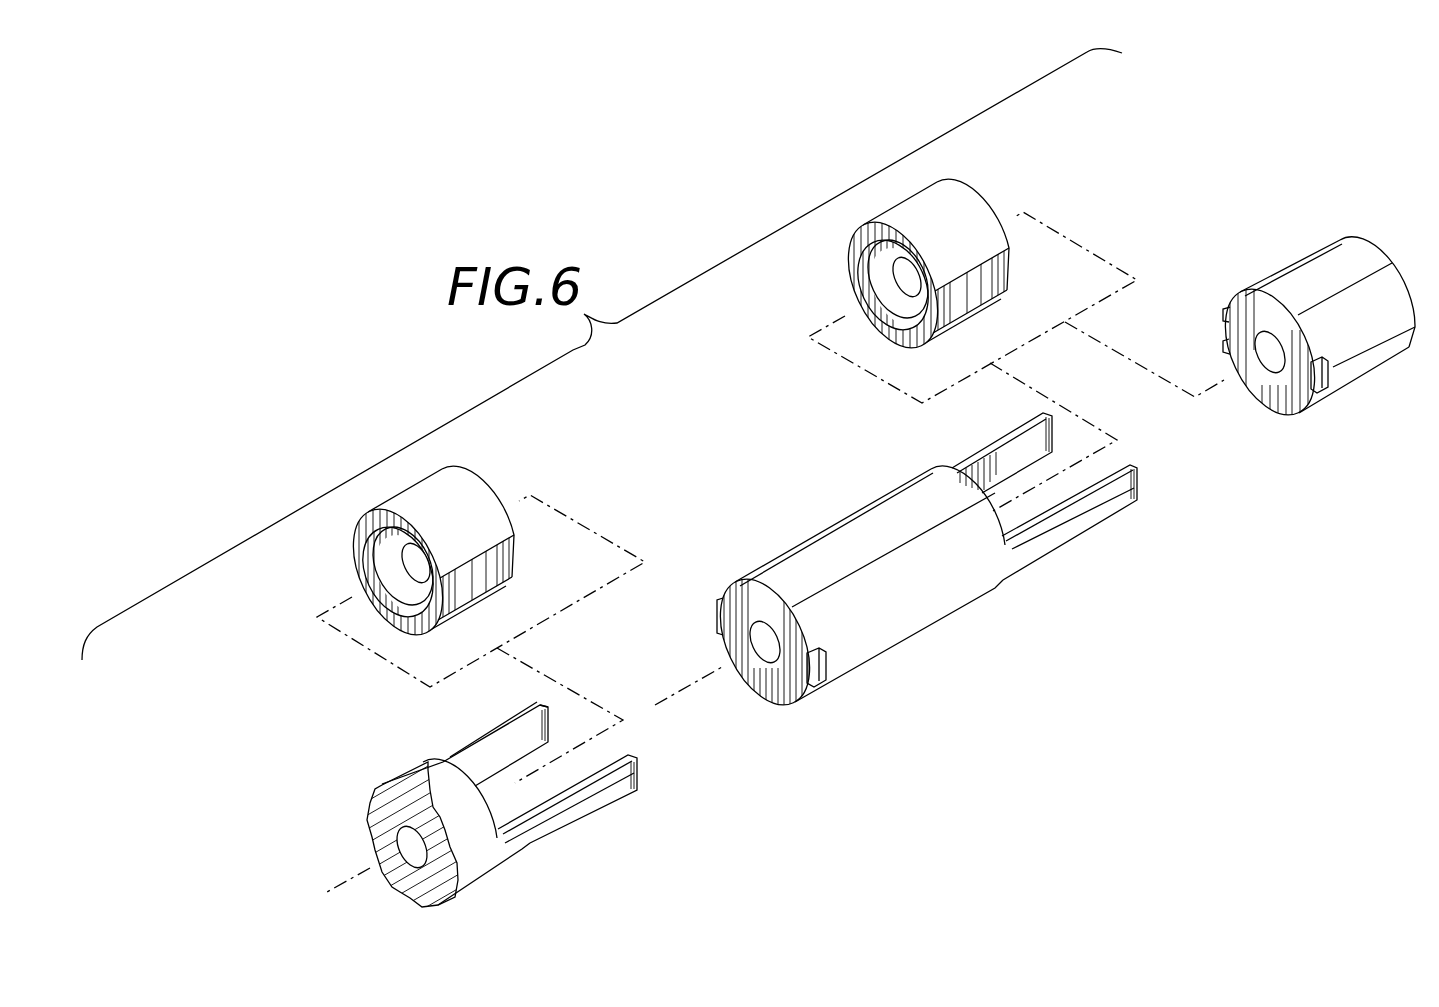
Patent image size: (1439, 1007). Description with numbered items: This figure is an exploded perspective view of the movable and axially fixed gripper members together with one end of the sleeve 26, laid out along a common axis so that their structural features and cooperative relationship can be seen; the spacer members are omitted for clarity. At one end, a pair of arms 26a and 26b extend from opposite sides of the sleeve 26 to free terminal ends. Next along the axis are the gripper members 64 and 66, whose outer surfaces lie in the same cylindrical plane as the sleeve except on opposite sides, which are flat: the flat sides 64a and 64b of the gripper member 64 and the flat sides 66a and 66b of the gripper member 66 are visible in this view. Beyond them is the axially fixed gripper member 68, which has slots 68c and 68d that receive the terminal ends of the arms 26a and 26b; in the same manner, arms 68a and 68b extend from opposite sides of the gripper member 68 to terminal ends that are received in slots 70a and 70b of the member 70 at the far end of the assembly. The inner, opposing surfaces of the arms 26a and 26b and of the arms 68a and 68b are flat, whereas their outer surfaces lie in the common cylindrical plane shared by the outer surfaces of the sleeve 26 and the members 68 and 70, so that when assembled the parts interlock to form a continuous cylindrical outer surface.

The sleeve 26 is at (483, 855).
The arm 26a is at (512, 740).
The arm 26b is at (583, 810).
The gripper member 64 is at (443, 505).
The flat side 64a is at (352, 548).
The flat side 64b is at (470, 591).
The gripper member 66 is at (927, 215).
The flat side 66a is at (848, 257).
The flat side 66b is at (967, 295).
The axially fixed gripper member 68 is at (933, 607).
The arm 68a is at (1012, 455).
The arm 68b is at (1080, 520).
The slot 68c is at (716, 615).
The slot 68d is at (805, 671).
The member 70 is at (1337, 268).
The slot 70a is at (1222, 324).
The slot 70b is at (1310, 377).